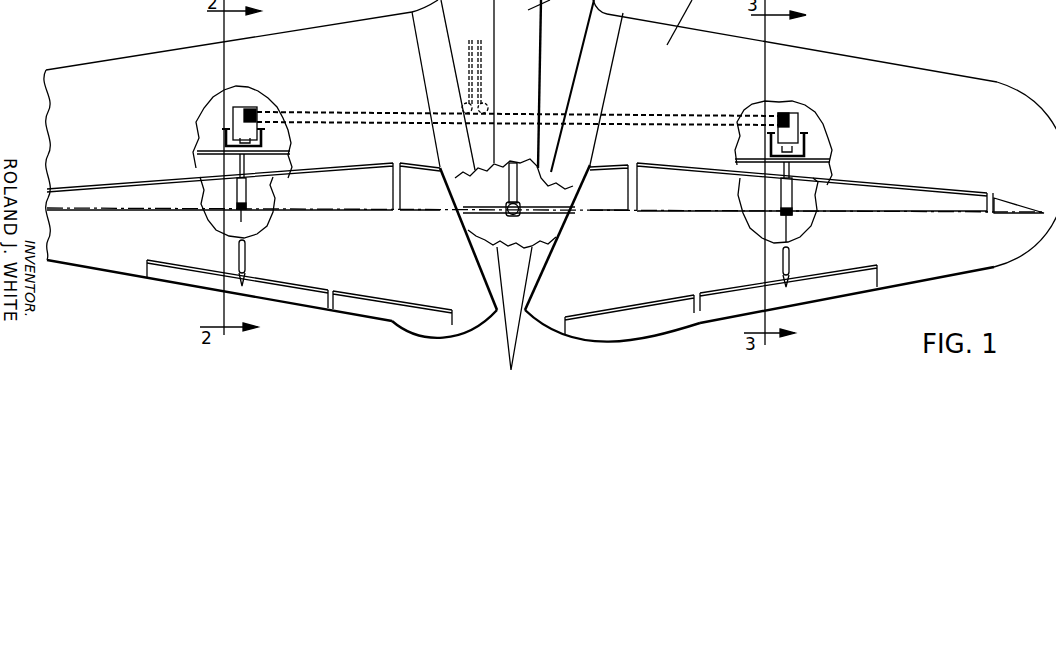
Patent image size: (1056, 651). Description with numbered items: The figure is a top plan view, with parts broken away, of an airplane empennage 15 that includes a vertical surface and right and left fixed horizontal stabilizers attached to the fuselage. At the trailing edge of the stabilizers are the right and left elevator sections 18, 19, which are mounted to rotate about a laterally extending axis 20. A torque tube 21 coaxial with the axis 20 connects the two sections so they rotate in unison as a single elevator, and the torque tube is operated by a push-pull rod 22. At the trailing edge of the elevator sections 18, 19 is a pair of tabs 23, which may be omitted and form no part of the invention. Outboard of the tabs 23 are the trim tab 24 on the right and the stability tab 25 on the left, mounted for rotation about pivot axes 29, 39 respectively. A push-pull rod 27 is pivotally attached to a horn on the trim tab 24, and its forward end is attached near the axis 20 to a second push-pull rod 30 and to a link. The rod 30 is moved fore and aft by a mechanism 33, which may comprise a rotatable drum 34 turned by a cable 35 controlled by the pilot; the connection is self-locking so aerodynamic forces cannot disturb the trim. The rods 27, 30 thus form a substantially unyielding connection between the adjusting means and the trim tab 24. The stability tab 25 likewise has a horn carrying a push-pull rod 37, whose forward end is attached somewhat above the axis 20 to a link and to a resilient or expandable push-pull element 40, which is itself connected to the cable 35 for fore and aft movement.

The airplane empennage 15 is at (870, 56).
The right elevator section 18 is at (902, 270).
The left elevator section 19 is at (98, 255).
The laterally extending axis 20 is at (968, 217).
The torque tube 21 is at (552, 213).
The push-pull rod 22 is at (507, 188).
The tabs 23 is at (428, 325).
The trim tab 24 is at (822, 290).
The stability tab 25 is at (280, 298).
The push-pull rod 27 is at (790, 268).
The pivot axis 29 is at (664, 310).
The second push-pull rod 30 is at (794, 167).
The mechanism 33 is at (791, 130).
The rotatable drum 34 is at (785, 112).
The cable 35 is at (654, 114).
The push-pull rod 37 is at (248, 262).
The pivot axis 39 is at (187, 267).
The resilient push-pull element 40 is at (253, 190).